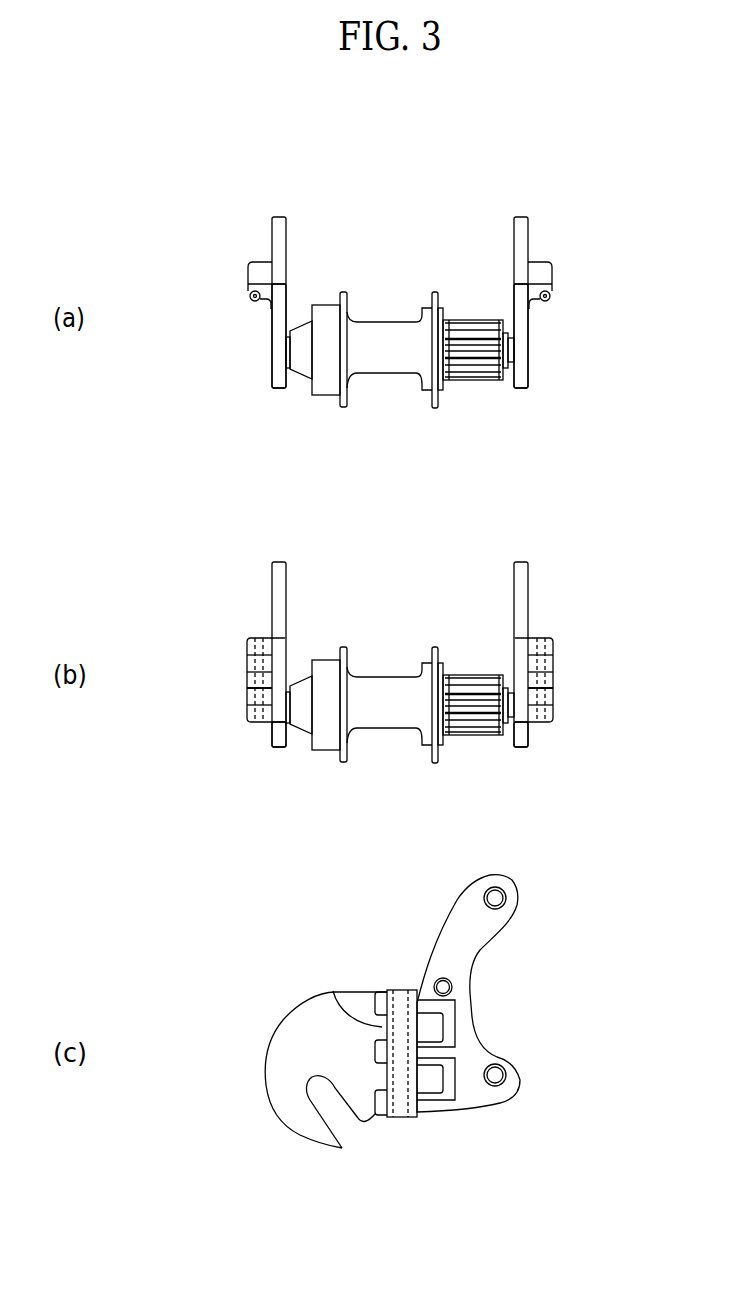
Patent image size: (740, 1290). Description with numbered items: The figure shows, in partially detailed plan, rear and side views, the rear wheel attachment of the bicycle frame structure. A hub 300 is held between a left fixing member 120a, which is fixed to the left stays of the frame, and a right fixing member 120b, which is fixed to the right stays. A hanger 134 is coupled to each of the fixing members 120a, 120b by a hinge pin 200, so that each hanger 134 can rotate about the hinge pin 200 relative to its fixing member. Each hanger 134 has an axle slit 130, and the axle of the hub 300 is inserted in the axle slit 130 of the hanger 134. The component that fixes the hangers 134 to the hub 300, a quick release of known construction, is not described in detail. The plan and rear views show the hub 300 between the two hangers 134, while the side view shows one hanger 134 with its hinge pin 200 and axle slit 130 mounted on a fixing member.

The left fixing member 120a is at (279, 221).
The right fixing member 120b is at (522, 221).
The hub 300 is at (388, 298).
The hinge pin 200 is at (250, 296).
The hanger 134 is at (278, 358).
The axle slit 130 is at (330, 1095).